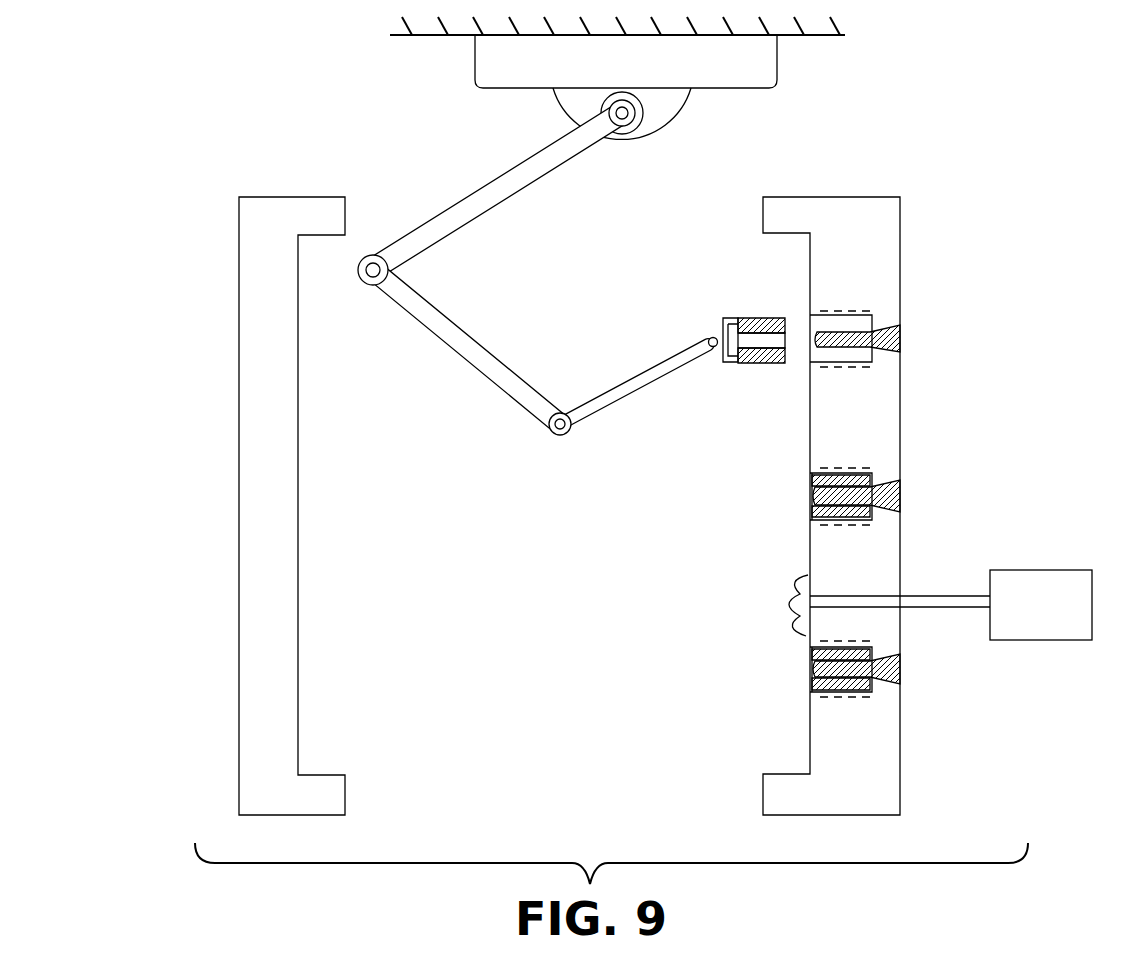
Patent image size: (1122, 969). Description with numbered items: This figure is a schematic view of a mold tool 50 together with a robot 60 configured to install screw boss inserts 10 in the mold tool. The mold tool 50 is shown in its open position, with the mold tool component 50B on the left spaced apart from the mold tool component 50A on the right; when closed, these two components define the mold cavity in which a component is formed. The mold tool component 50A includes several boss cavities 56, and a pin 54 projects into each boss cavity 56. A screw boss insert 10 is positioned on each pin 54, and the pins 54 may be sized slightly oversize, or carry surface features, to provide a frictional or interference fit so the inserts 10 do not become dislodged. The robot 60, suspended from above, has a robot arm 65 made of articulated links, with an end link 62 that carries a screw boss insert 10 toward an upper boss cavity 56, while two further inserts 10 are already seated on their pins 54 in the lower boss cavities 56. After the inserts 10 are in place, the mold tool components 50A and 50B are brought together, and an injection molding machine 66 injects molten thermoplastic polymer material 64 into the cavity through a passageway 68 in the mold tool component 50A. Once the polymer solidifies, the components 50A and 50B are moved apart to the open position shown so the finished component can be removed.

The screw boss insert 10 is at (746, 306).
The mold tool 50 is at (957, 252).
The mold tool component 50A is at (905, 410).
The mold tool component 50B is at (238, 521).
The pin 54 is at (812, 338).
The boss cavity 56 is at (817, 348).
The robot 60 is at (538, 264).
The end link 62 is at (630, 386).
The molten thermoplastic polymer material 64 is at (790, 615).
The robot arm 65 is at (477, 357).
The injection molding machine 66 is at (1036, 620).
The passageway 68 is at (871, 597).